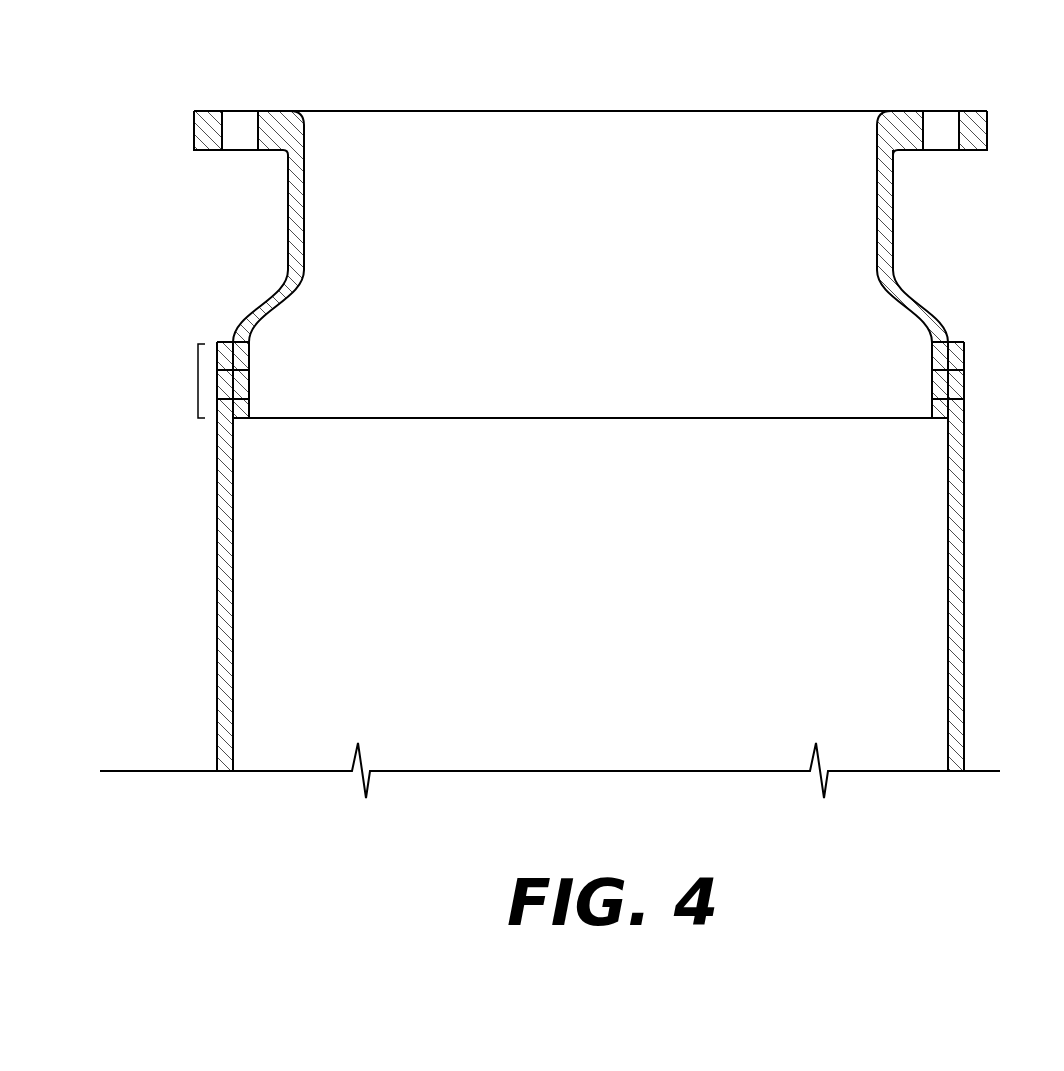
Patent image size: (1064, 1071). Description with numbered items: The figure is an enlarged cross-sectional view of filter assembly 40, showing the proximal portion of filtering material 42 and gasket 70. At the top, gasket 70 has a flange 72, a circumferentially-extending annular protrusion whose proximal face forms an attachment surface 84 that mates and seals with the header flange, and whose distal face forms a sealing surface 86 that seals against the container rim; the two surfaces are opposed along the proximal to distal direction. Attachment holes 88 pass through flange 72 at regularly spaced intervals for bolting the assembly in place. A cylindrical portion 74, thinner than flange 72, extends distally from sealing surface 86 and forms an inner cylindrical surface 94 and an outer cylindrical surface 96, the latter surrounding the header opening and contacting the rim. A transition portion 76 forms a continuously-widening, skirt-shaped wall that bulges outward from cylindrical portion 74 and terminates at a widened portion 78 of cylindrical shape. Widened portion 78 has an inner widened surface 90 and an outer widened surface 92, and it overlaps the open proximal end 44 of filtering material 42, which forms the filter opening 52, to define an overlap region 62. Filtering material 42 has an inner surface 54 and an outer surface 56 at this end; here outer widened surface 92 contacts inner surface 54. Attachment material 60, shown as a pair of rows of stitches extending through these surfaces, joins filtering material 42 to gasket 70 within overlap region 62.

The filter assembly 40 is at (100, 86).
The filtering material 42 is at (958, 478).
The proximal end 44 is at (229, 342).
The filter opening 52 is at (548, 340).
The inner surface 54 is at (250, 391).
The outer surface 56 is at (218, 410).
The attachment material 60 is at (960, 400).
The overlap region 62 is at (198, 373).
The gasket 70 is at (914, 215).
The flange 72 is at (900, 135).
The cylindrical portion 74 is at (297, 212).
The transition portion 76 is at (270, 308).
The widened portion 78 is at (248, 357).
The attachment surface 84 is at (205, 110).
The sealing surface 86 is at (211, 151).
The attachment holes 88 is at (934, 120).
The inner widened surface 90 is at (931, 410).
The outer widened surface 92 is at (946, 346).
The inner cylindrical surface 94 is at (877, 240).
The outer cylindrical surface 96 is at (893, 186).